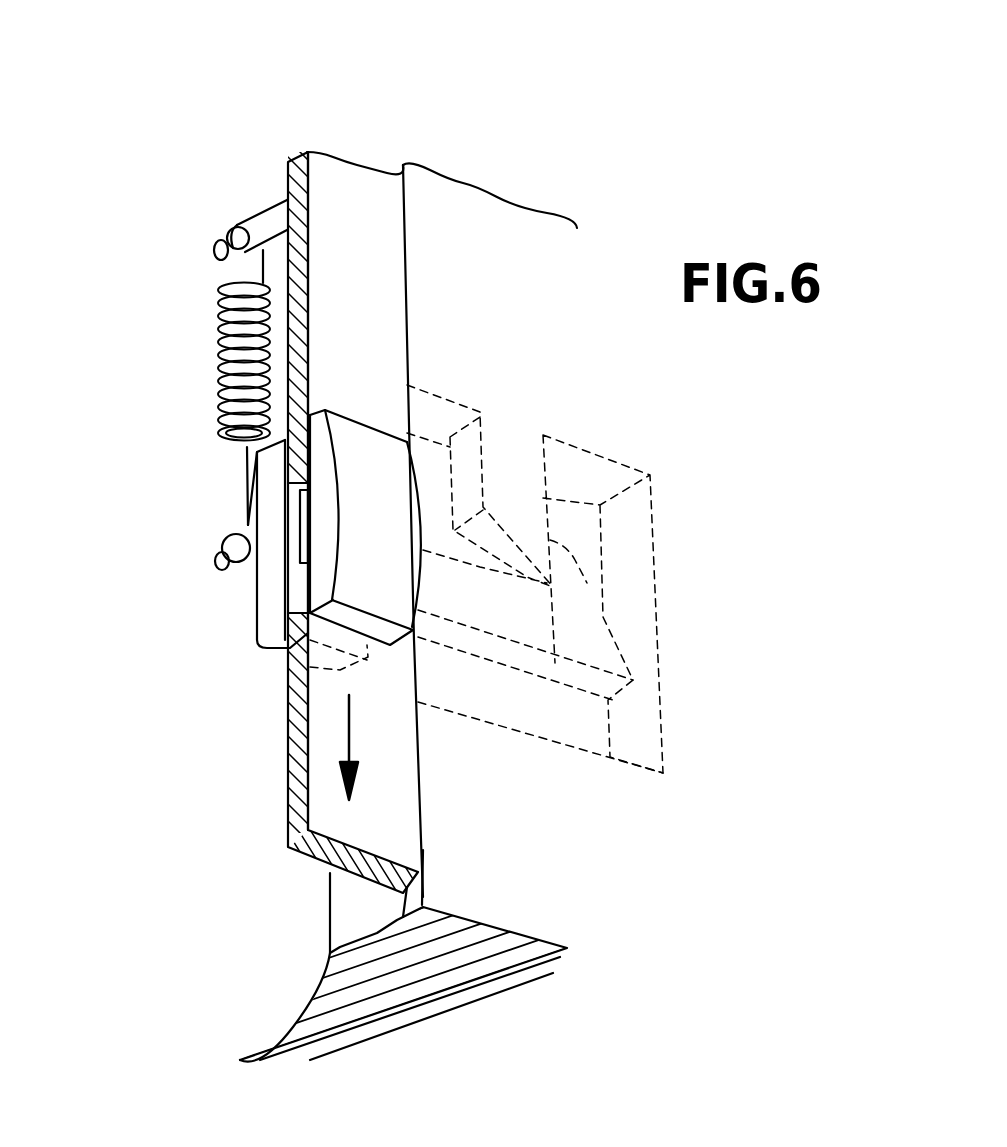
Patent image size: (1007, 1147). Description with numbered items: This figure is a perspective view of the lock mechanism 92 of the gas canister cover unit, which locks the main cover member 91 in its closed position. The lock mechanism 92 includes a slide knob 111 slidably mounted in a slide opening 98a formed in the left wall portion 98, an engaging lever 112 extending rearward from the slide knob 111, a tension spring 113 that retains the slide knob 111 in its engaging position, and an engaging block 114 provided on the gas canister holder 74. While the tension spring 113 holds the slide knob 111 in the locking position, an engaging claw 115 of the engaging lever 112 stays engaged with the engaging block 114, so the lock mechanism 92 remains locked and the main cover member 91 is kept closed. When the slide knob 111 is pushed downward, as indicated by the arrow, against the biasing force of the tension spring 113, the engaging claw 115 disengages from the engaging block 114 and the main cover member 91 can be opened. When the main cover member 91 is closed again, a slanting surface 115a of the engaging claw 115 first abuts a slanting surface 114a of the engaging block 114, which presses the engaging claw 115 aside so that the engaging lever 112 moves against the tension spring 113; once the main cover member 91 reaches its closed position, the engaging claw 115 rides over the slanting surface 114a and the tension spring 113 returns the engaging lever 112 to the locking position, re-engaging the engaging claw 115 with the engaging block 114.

The gas canister holder 74 is at (527, 247).
The main cover member 91 is at (355, 172).
The lock mechanism 92 is at (150, 485).
The left wall portion 98 is at (373, 297).
The slide opening 98a is at (303, 612).
The slide knob 111 is at (380, 455).
The engaging lever 112 is at (518, 628).
The tension spring 113 is at (217, 342).
The engaging block 114 is at (540, 503).
The slanting surface of the engaging block 114a is at (500, 567).
The engaging claw 115 is at (608, 645).
The slanting surface of the engaging claw 115a is at (607, 615).